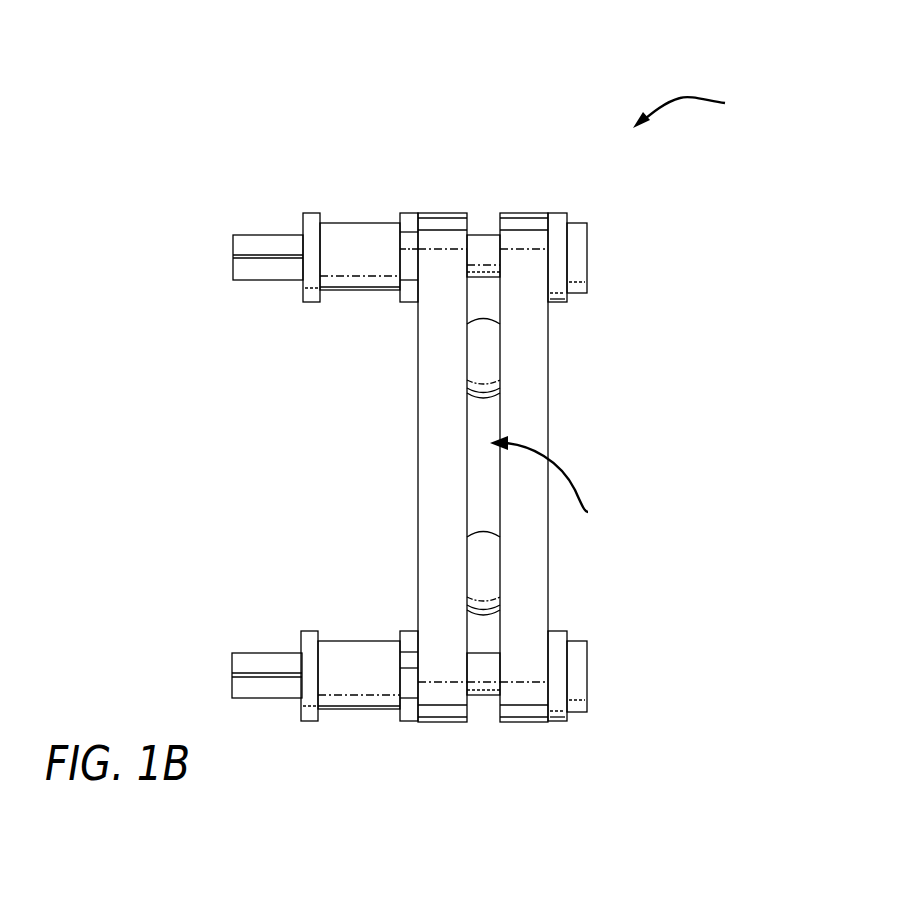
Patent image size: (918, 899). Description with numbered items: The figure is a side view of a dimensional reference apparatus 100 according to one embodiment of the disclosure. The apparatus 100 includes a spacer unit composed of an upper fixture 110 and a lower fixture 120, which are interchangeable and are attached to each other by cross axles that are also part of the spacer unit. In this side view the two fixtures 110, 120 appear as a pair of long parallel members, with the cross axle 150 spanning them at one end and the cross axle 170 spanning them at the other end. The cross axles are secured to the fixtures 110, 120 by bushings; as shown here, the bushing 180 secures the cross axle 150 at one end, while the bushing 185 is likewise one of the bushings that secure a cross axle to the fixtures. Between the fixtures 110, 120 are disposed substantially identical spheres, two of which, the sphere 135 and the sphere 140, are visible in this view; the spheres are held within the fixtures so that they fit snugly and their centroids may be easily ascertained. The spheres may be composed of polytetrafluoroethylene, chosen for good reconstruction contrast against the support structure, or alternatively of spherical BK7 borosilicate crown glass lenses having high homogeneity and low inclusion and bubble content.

The dimensional reference apparatus 100 is at (533, 82).
The upper fixture 110 is at (525, 212).
The lower fixture 120 is at (443, 212).
The sphere 135 is at (490, 345).
The sphere 140 is at (485, 563).
The cross axle 150 is at (588, 262).
The cross axle 170 is at (575, 712).
The bushing 180 is at (343, 275).
The bushing 185 is at (348, 702).